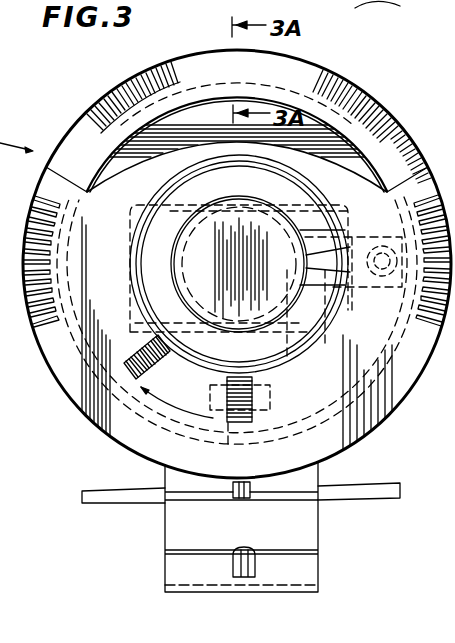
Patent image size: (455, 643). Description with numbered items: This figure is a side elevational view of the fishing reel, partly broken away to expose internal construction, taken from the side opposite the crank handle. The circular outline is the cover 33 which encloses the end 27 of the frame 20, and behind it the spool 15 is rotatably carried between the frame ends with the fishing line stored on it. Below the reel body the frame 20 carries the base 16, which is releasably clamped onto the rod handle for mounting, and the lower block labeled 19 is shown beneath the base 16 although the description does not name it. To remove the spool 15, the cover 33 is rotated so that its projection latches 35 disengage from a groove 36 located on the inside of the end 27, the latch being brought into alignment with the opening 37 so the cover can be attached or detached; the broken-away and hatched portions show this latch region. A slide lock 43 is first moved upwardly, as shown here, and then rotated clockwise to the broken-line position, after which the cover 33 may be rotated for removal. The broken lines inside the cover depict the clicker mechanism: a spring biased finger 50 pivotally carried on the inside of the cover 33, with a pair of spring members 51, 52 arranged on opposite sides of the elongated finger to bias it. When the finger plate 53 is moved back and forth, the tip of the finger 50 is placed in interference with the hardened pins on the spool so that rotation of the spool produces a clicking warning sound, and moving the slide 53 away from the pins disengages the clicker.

The spool 15 is at (176, 130).
The base 16 is at (355, 483).
The base block with screw 19 is at (325, 567).
The frame 20 is at (292, 82).
The end 27 is at (90, 117).
The cover 33 is at (383, 410).
The projection latches 35 is at (409, 128).
The groove 36 is at (181, 105).
The opening 37 is at (345, 115).
The slide lock 43 is at (152, 368).
The finger 50 is at (318, 320).
The spring member 51 is at (330, 203).
The spring member 52 is at (270, 397).
The finger plate 53 is at (322, 238).